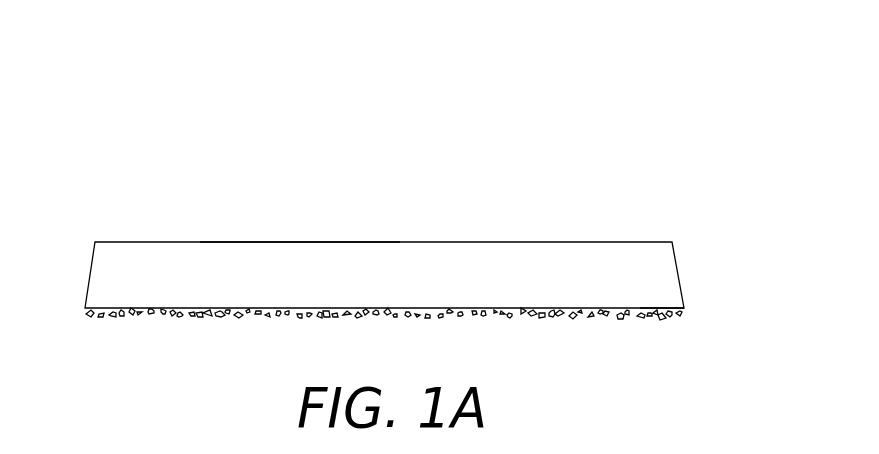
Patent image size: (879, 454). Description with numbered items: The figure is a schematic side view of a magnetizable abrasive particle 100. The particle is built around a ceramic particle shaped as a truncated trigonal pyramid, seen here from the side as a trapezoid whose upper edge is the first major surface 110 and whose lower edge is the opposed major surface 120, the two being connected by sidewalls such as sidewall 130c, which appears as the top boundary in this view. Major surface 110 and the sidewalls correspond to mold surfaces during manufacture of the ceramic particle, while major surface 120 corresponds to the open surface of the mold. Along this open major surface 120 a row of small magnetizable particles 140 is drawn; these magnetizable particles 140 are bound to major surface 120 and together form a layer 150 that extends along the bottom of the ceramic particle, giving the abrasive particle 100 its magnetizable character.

The magnetizable abrasive particle 100 is at (149, 164).
The major surface 110 is at (588, 242).
The sidewall 130c is at (294, 242).
The major surface 120 is at (128, 316).
The magnetizable particles 140 is at (222, 313).
The layer 150 is at (678, 318).